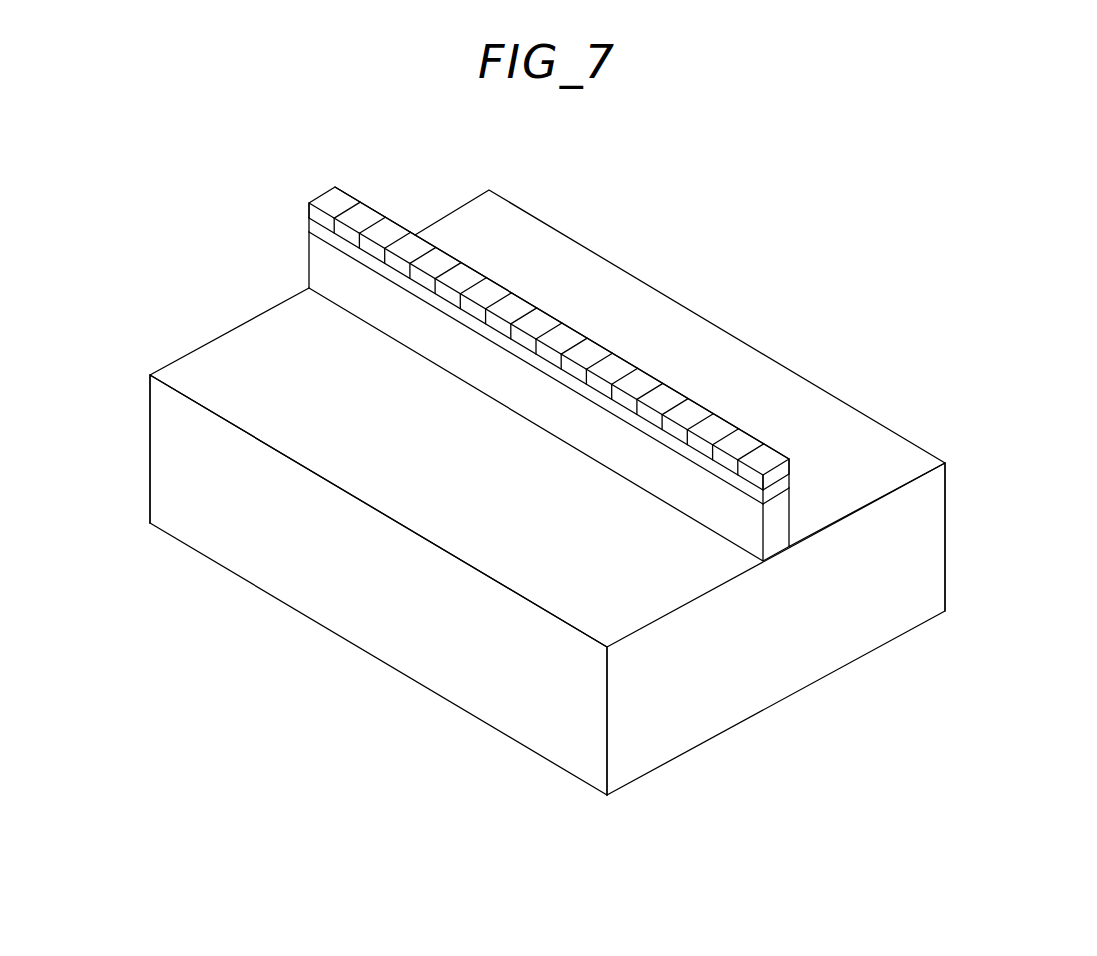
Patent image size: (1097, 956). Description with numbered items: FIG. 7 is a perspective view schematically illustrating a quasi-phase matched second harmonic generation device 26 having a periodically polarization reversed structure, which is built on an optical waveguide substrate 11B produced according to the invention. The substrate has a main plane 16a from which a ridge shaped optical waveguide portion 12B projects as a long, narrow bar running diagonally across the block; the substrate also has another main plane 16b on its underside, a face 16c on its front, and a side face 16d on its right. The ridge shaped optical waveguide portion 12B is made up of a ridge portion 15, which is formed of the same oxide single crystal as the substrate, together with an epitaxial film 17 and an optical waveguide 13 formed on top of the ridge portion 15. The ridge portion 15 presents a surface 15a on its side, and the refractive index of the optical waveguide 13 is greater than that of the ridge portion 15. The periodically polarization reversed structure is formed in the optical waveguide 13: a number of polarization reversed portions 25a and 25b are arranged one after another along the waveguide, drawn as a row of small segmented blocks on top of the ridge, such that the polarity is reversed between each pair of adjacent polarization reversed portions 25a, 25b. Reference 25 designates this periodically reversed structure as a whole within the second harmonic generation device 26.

The optical waveguide substrate 11B is at (963, 472).
The ridge shaped optical waveguide portion 12B is at (629, 363).
The optical waveguide 13 is at (568, 335).
The ridge portion 15 is at (643, 470).
The surface of ridge portion 15a is at (697, 507).
The main plane 16a is at (828, 420).
The another main plane 16b is at (497, 733).
The front side face 16c is at (320, 590).
The side face 16d is at (815, 648).
The epitaxial film 17 is at (622, 415).
The grating layer structure 25 is at (733, 417).
The polarization reversed portion 25a is at (408, 248).
The polarization reversed portion 25b is at (387, 228).
The second harmonic generation device 26 is at (835, 308).